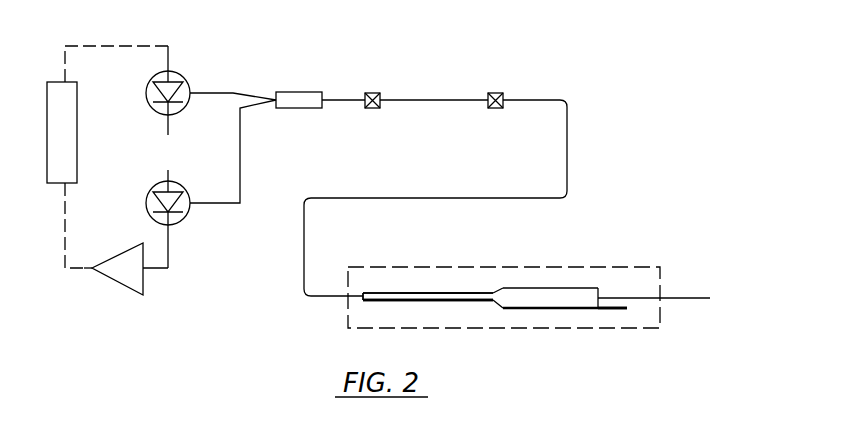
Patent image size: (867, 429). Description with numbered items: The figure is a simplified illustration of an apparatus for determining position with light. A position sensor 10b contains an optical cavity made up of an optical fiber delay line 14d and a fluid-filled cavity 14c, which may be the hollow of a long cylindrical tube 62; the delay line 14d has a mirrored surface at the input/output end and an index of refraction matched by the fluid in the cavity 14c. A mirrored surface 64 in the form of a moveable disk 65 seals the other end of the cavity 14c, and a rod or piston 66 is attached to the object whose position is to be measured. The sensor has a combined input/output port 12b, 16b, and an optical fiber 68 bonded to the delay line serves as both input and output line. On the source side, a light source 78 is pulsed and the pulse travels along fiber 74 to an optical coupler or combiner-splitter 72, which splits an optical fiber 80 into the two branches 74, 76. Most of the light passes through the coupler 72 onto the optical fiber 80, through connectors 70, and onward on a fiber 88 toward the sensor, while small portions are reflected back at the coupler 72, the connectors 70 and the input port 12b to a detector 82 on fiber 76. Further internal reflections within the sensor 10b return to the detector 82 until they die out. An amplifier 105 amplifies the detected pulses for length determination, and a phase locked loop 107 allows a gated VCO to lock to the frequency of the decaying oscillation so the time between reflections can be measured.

The phase locked loop 107 is at (77, 140).
The light source 78 is at (146, 100).
The detector 82 is at (145, 205).
The amplifier 105 is at (116, 286).
The fiber 74 is at (232, 93).
The fiber 76 is at (240, 186).
The optical coupler 72 is at (300, 92).
The optical fiber 80 is at (342, 100).
The connector 70 is at (372, 93).
The fiber 88 is at (428, 100).
The optical fiber 68 is at (304, 268).
The position sensor 10b is at (588, 267).
The input port 12b is at (363, 297).
The output port 16b is at (428, 296).
The optical fiber delay line 14d is at (418, 294).
The long cylindrical tube 62 is at (522, 288).
The cavity 14c is at (550, 306).
The moveable disk 65 is at (600, 292).
The mirrored surface 64 is at (598, 301).
The rod or piston 66 is at (700, 298).